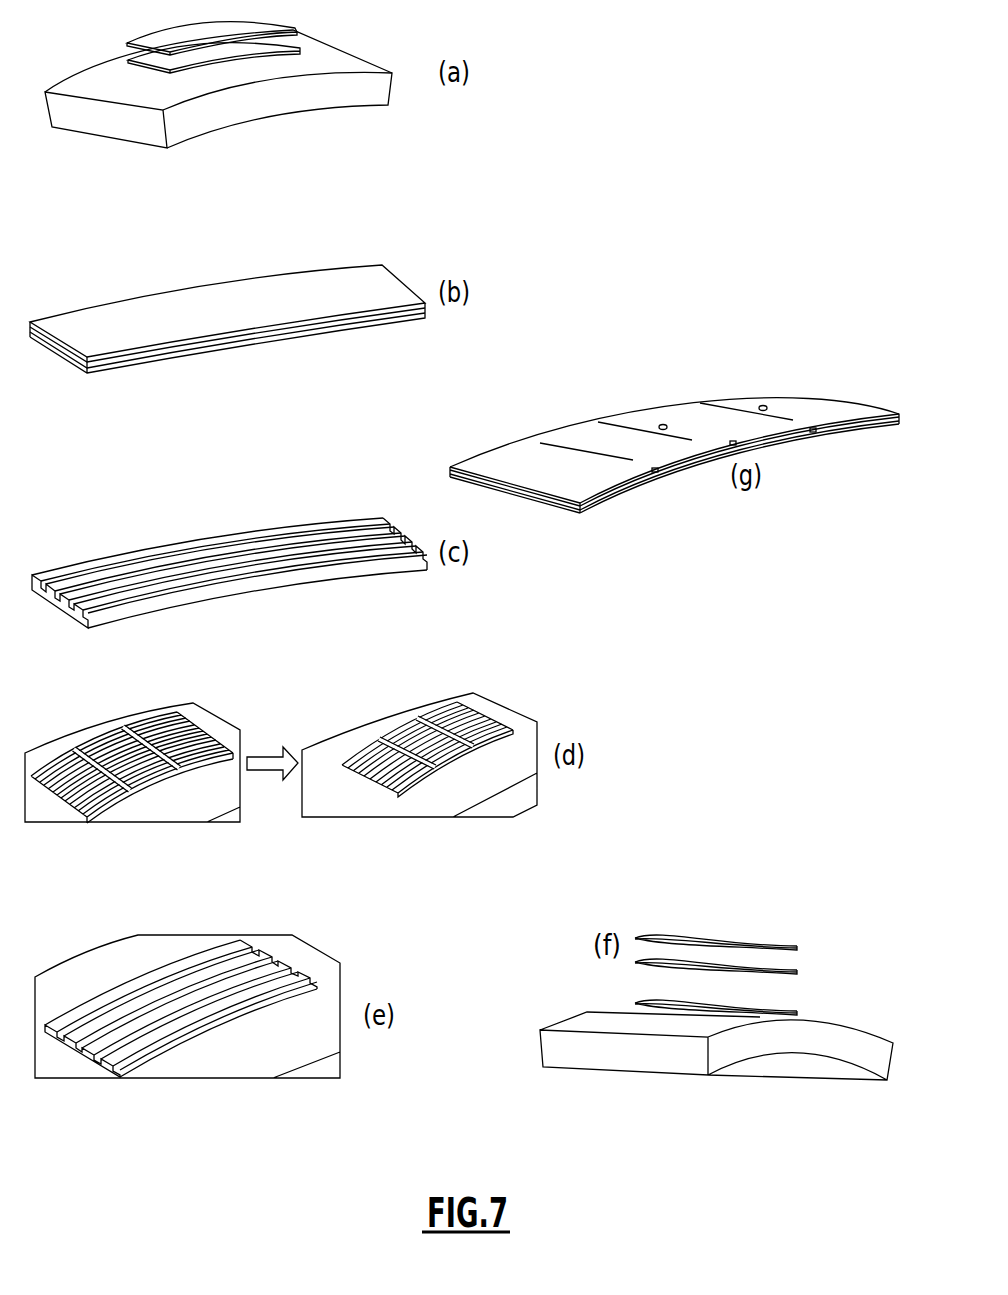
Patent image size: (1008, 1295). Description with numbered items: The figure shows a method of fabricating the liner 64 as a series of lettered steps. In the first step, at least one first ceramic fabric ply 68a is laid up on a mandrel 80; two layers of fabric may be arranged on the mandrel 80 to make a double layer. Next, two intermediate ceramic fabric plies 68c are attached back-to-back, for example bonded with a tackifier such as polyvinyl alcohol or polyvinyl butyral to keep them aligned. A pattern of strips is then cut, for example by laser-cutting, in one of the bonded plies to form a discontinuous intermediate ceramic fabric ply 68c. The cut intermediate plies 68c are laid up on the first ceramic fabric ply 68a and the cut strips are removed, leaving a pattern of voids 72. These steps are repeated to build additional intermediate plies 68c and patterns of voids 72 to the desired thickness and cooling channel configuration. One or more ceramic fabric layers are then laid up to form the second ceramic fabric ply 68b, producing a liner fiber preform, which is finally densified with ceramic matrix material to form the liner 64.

The first ceramic fabric ply 68a is at (292, 46).
The mandrel 80 is at (287, 103).
The intermediate ceramic fabric plies 68c is at (315, 326).
The liner 64 is at (635, 381).
The pattern of voids 72 is at (417, 722).
The second ceramic fabric ply 68b is at (793, 942).